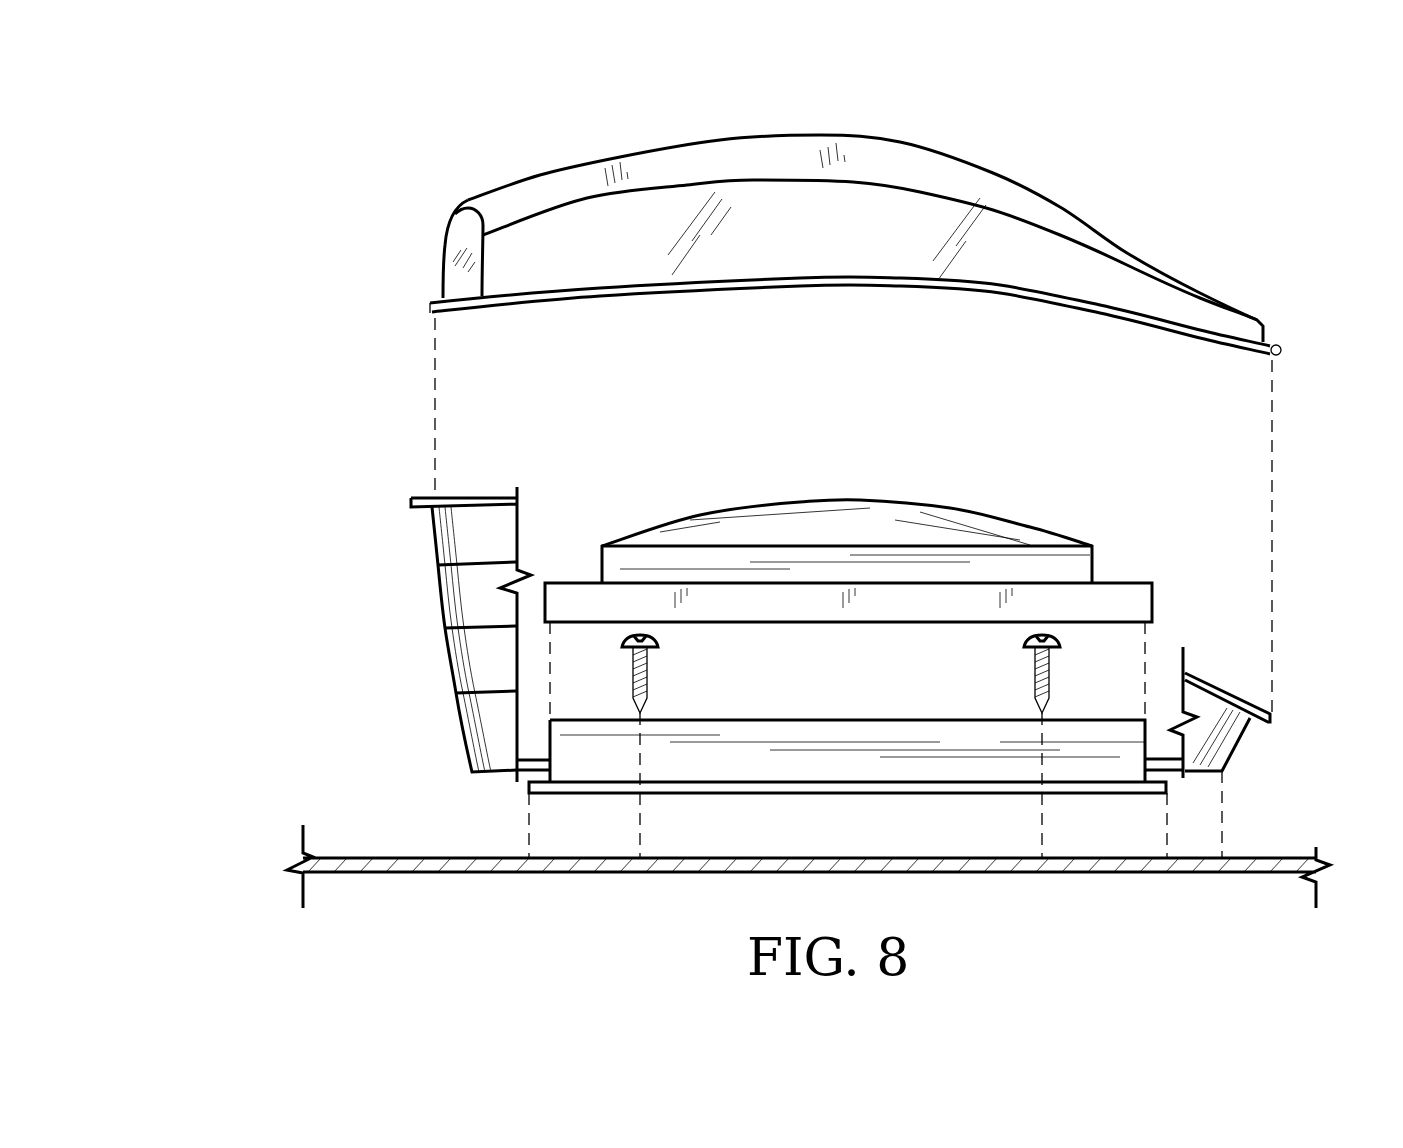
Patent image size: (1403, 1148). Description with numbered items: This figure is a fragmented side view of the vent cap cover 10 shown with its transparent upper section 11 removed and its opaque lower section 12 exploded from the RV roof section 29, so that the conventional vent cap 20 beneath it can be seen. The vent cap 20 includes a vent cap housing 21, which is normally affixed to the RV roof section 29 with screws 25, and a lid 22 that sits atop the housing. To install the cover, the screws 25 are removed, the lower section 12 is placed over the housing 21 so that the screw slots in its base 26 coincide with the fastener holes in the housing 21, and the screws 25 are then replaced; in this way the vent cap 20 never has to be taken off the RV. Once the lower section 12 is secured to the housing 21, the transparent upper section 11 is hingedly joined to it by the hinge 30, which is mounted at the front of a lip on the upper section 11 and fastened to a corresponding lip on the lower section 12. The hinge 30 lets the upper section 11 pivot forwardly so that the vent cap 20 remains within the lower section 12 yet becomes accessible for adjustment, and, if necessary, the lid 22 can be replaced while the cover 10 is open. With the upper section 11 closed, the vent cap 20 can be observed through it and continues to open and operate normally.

The vent cap cover 10 is at (367, 407).
The transparent upper section 11 is at (1124, 200).
The lower section 12 is at (392, 631).
The vent cap 20 is at (1112, 484).
The vent cap housing 21 is at (860, 733).
The lid 22 is at (840, 527).
The screws 25 is at (648, 668).
The base 26 is at (535, 740).
The RV roof section 29 is at (1273, 858).
The hinge 30 is at (1300, 324).